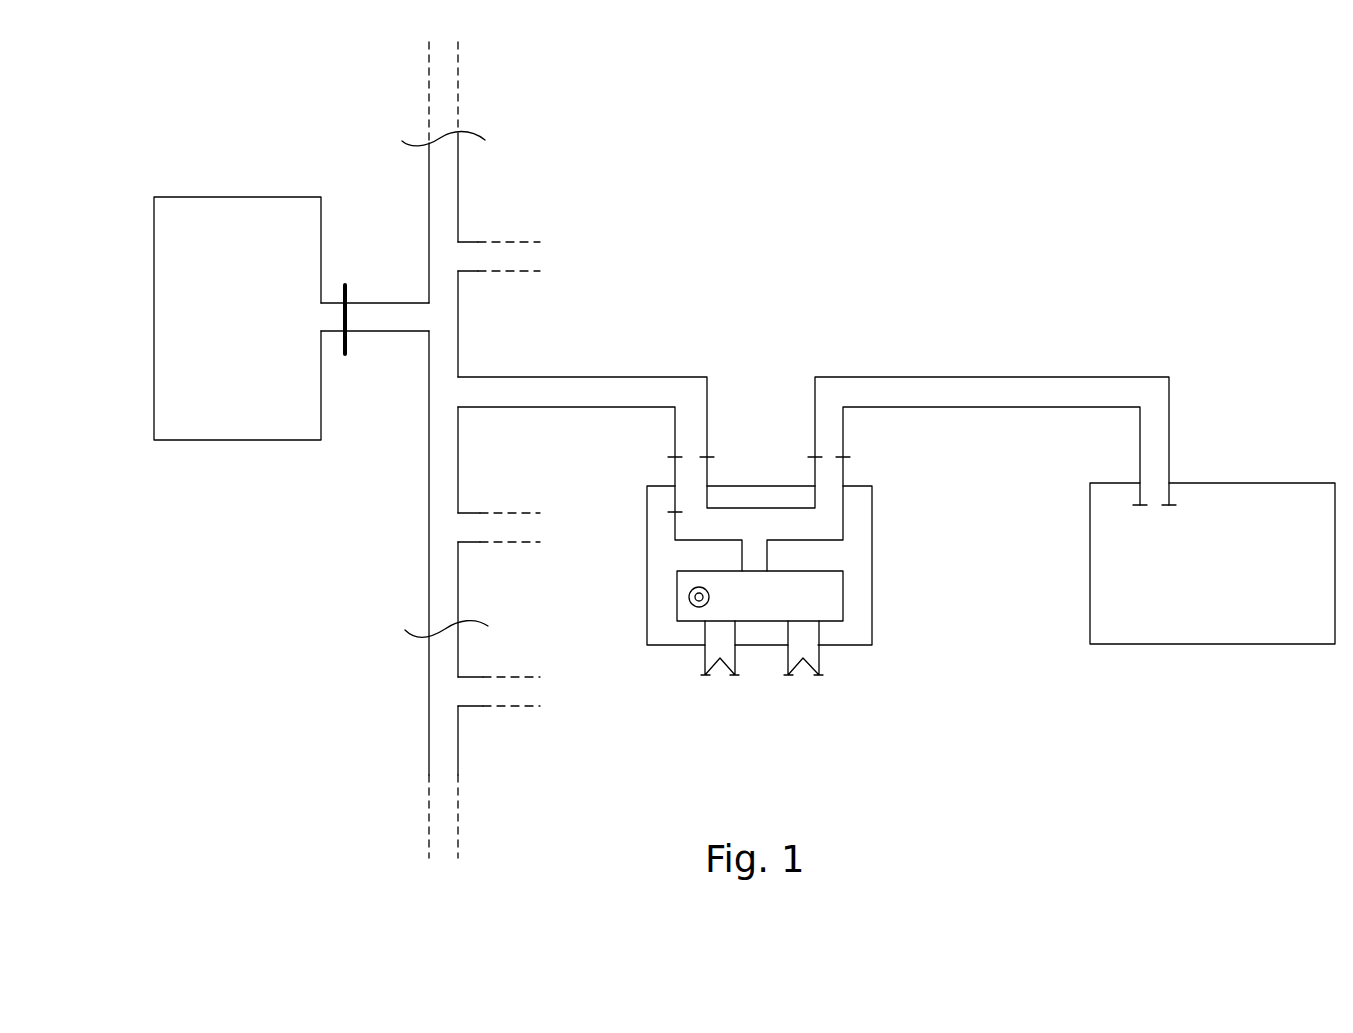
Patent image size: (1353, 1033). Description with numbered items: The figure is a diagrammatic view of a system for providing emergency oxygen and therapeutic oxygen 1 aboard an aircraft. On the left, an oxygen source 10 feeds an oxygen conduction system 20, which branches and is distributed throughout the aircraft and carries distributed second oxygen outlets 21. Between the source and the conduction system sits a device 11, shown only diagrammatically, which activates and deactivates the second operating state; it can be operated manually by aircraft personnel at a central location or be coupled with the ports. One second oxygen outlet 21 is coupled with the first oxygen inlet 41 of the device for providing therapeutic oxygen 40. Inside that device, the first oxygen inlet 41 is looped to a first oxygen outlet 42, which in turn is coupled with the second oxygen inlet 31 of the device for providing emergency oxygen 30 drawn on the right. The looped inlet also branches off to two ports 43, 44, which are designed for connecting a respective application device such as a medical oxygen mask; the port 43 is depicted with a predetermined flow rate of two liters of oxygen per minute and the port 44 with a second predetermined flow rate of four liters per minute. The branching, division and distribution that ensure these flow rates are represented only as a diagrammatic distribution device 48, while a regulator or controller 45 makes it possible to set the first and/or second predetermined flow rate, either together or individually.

The system for providing emergency oxygen and therapeutic oxygen 1 is at (247, 125).
The oxygen source 10 is at (230, 442).
The device 11 is at (347, 285).
The oxygen conduction system 20 is at (462, 363).
The second oxygen outlet 21 is at (516, 258).
The device for providing emergency oxygen 30 is at (1205, 658).
The second oxygen inlet 31 is at (1153, 490).
The device for providing therapeutic oxygen 40 is at (873, 620).
The first oxygen inlet 41 is at (687, 473).
The first oxygen outlet 42 is at (830, 473).
The port 43 is at (719, 677).
The port 44 is at (804, 677).
The regulator or controller 45 is at (688, 597).
The distribution device 48 is at (830, 600).